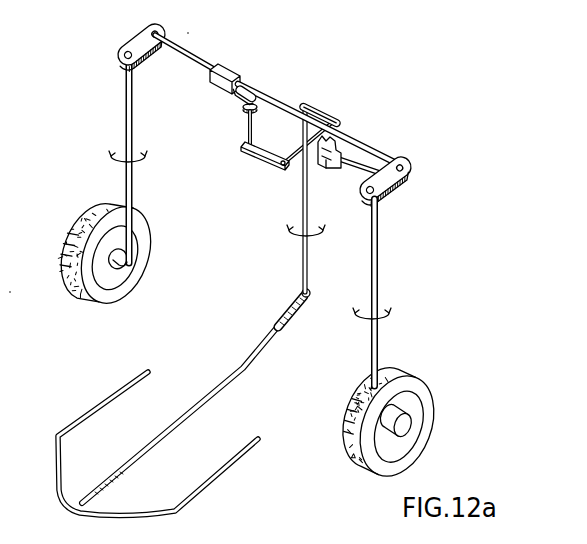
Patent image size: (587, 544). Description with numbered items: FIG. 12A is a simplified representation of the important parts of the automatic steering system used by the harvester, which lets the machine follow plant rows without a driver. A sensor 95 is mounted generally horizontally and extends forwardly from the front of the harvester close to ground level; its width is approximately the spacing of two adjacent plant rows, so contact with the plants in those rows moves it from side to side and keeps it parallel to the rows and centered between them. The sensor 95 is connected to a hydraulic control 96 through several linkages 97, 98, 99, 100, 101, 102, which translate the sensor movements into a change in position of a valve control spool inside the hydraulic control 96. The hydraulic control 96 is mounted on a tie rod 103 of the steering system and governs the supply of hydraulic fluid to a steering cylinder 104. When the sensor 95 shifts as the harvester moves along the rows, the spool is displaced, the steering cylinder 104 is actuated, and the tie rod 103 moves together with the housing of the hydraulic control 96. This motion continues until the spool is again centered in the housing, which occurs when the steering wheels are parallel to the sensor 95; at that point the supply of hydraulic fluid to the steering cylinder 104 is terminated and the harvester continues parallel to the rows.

The sensor 95 is at (148, 511).
The hydraulic control 96 is at (237, 74).
The linkage 97 is at (303, 296).
The linkage 98 is at (309, 262).
The linkage 99 is at (326, 112).
The linkage 100 is at (300, 156).
The linkage 101 is at (267, 153).
The linkage 102 is at (243, 110).
The tie rod 103 is at (377, 152).
The steering cylinder 104 is at (322, 163).